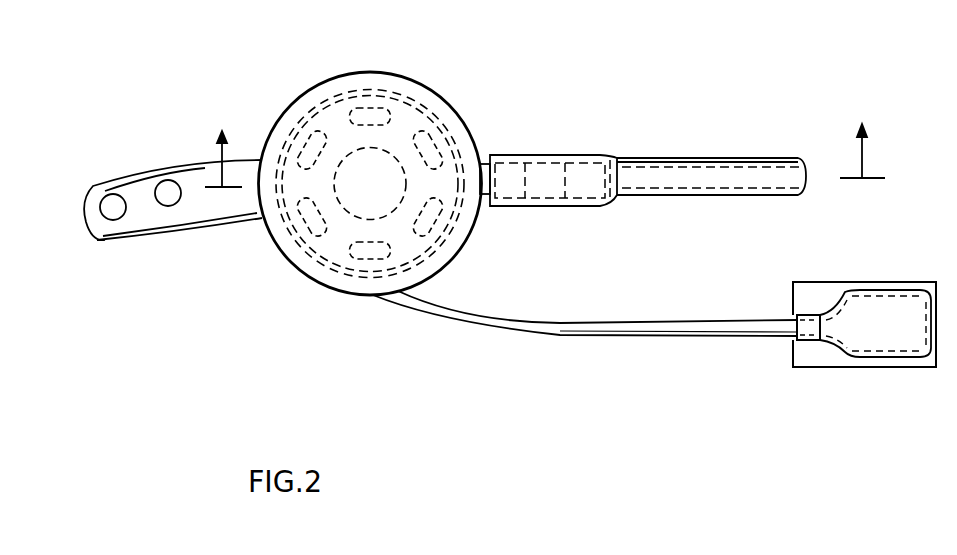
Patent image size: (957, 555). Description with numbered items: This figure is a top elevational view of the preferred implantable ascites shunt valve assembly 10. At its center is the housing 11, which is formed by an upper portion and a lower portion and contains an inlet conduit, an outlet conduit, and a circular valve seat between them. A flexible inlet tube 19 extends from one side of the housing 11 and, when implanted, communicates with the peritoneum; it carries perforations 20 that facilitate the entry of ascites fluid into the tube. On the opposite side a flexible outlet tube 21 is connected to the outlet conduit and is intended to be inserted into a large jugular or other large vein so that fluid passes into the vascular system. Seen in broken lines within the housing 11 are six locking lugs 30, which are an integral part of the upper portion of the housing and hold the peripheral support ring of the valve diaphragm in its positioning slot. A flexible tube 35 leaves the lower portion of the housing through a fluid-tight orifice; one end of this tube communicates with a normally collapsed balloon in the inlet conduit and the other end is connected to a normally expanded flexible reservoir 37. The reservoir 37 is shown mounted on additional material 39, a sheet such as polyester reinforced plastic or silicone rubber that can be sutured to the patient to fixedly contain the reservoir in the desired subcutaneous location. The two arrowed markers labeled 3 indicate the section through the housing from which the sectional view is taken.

The section line of FIG. 3 is at (545, 141).
The ascites shunt valve assembly 10 is at (471, 90).
The housing 11 is at (297, 100).
The flexible inlet tube 19 is at (168, 165).
The perforations 20 is at (170, 197).
The flexible outlet tube 21 is at (632, 175).
The locking lugs 30 is at (312, 222).
The flexible tube 35 is at (562, 330).
The flexible reservoir 37 is at (867, 330).
The additional material 39 is at (817, 290).